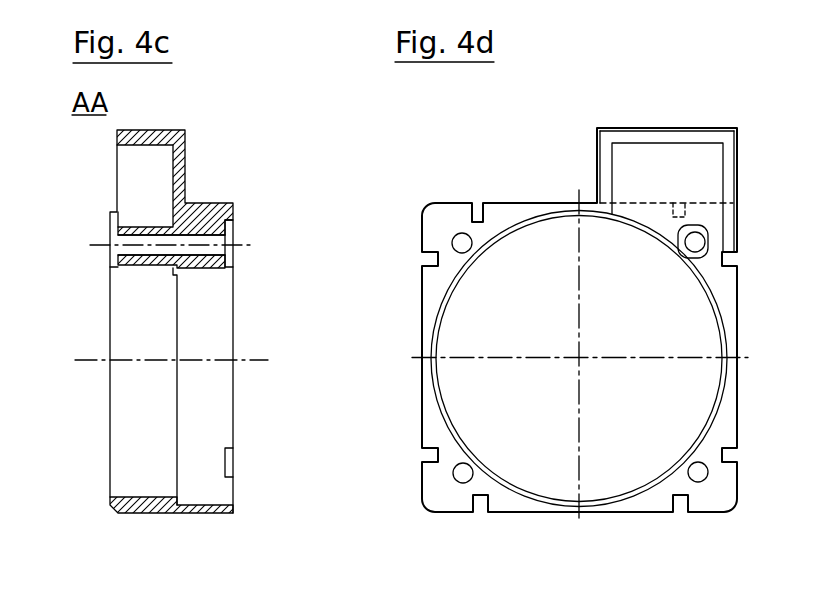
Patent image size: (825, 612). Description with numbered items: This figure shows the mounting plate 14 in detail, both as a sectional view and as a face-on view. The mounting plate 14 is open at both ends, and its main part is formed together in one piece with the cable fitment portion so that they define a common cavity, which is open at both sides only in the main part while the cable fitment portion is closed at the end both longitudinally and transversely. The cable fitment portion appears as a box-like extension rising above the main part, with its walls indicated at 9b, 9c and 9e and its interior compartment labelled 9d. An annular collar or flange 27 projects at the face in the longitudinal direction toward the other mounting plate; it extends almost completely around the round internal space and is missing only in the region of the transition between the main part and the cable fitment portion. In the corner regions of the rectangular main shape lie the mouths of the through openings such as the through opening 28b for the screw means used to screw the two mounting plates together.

In FIG. 4C, the mounting plate 14 is at (202, 213).
In FIG. 4D, the mounting plate 14 is at (440, 212).
In FIG. 4C, the through opening 28b is at (130, 247).
In FIG. 4D, the annular collar or flange 27 is at (458, 285).
In FIG. 4D, the side wall of terminal box 9b is at (605, 172).
In FIG. 4D, the side wall of terminal box 9c is at (728, 177).
In FIG. 4D, the terminal compartment 9d is at (666, 200).
In FIG. 4D, the top wall of terminal box 9e is at (663, 138).